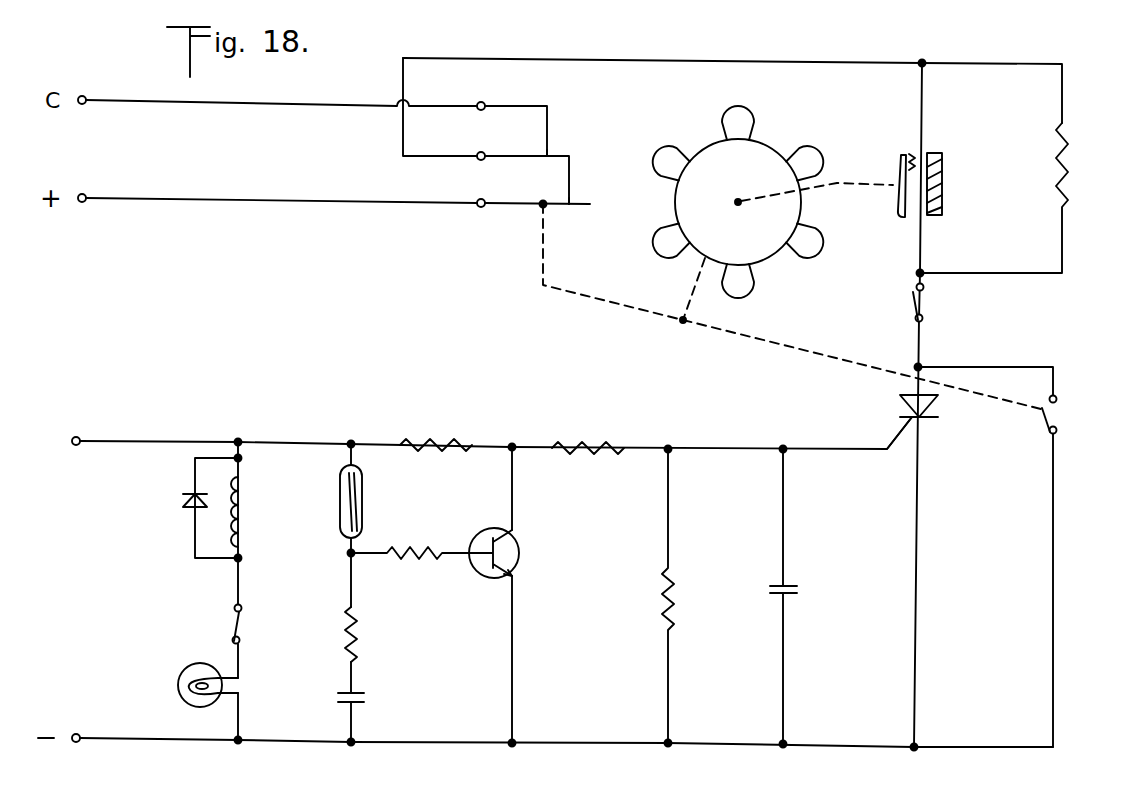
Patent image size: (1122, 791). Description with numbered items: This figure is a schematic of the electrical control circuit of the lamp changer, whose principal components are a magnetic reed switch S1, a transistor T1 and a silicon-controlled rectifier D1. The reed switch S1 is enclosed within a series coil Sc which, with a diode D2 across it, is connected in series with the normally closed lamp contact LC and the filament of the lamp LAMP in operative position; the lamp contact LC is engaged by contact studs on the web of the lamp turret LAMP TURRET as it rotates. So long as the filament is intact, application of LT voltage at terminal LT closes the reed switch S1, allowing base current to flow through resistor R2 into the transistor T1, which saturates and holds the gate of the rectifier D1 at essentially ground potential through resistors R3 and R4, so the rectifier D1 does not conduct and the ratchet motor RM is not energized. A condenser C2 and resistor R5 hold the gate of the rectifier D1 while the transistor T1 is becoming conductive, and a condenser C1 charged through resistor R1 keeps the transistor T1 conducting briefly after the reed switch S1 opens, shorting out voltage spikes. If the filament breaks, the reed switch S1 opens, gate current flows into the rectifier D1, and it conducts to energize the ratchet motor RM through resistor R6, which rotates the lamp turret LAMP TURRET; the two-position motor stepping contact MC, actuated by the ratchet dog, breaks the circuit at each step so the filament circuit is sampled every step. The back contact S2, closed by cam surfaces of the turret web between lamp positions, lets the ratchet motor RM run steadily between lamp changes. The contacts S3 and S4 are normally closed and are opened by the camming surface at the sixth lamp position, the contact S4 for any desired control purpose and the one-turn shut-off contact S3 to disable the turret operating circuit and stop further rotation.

The LT voltage LT is at (472, 435).
The contact S4 is at (543, 153).
The one-turn shut-off contact S3 is at (566, 201).
The lamp turret LAMP TURRET is at (770, 213).
The ratchet motor RM is at (943, 215).
The resistor R6 is at (1066, 146).
The motor stepping contact MC is at (924, 308).
The silicon-controlled rectifier D1 is at (900, 406).
The back contact S2 is at (1057, 418).
The resistor R3 is at (462, 442).
The resistor R4 is at (616, 443).
The transistor T1 is at (495, 529).
The resistor R2 is at (434, 548).
The magnetic reed switch S1 is at (364, 495).
The resistor R1 is at (357, 617).
The condenser C1 is at (362, 699).
The diode D2 is at (183, 510).
The series coil Sc is at (246, 488).
The lamp contact LC is at (243, 628).
The lamp LAMP is at (179, 685).
The resistor R5 is at (664, 592).
The condenser C2 is at (799, 591).